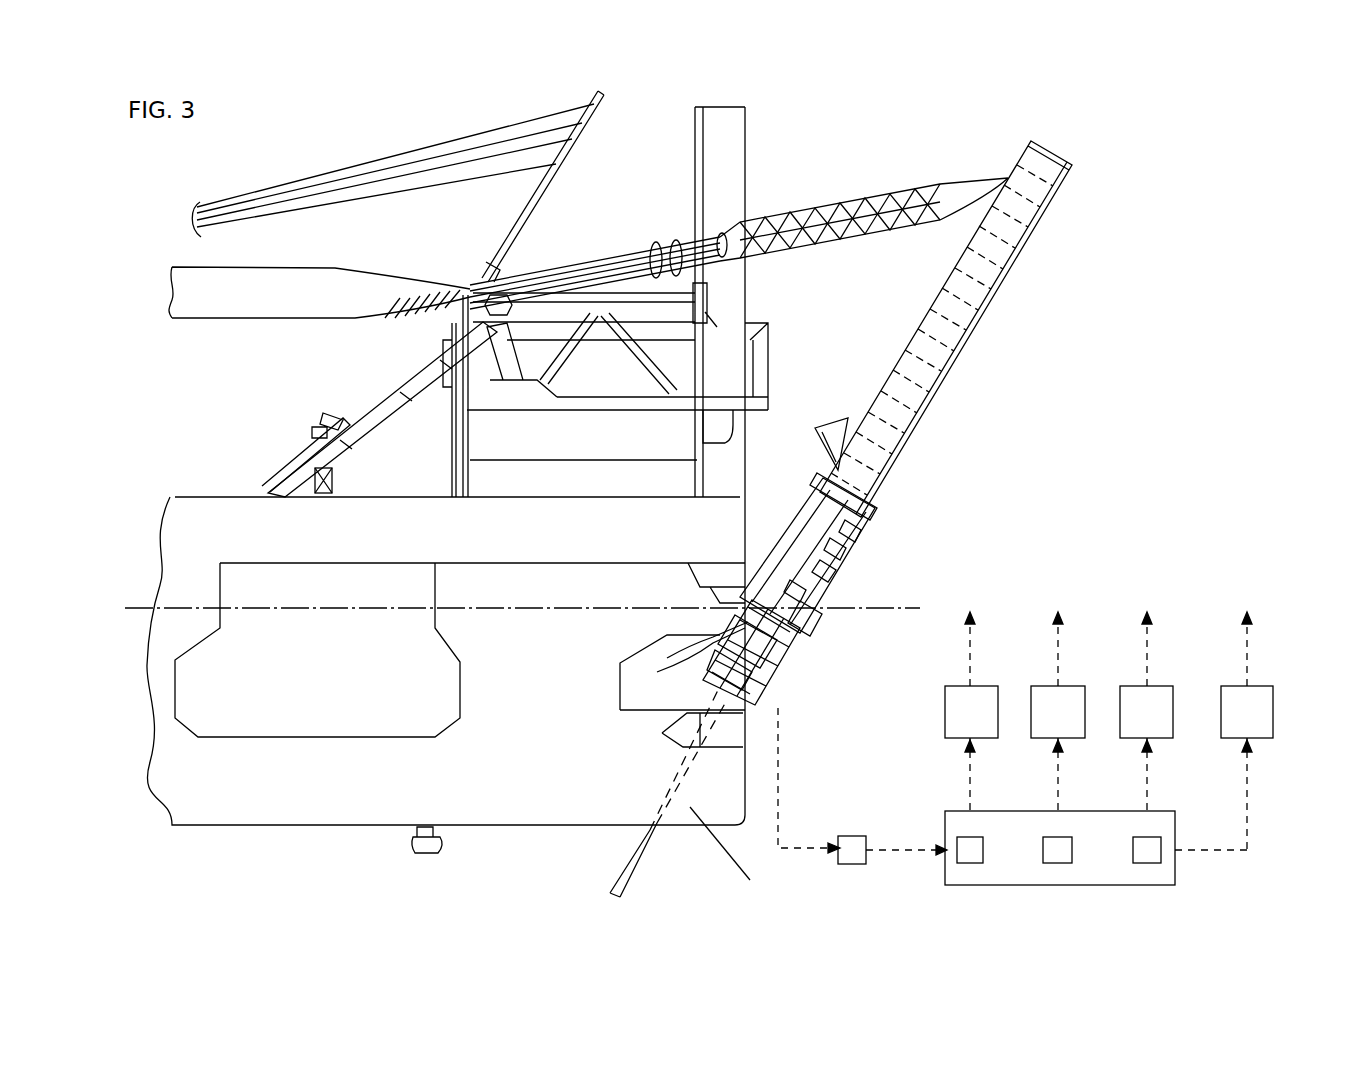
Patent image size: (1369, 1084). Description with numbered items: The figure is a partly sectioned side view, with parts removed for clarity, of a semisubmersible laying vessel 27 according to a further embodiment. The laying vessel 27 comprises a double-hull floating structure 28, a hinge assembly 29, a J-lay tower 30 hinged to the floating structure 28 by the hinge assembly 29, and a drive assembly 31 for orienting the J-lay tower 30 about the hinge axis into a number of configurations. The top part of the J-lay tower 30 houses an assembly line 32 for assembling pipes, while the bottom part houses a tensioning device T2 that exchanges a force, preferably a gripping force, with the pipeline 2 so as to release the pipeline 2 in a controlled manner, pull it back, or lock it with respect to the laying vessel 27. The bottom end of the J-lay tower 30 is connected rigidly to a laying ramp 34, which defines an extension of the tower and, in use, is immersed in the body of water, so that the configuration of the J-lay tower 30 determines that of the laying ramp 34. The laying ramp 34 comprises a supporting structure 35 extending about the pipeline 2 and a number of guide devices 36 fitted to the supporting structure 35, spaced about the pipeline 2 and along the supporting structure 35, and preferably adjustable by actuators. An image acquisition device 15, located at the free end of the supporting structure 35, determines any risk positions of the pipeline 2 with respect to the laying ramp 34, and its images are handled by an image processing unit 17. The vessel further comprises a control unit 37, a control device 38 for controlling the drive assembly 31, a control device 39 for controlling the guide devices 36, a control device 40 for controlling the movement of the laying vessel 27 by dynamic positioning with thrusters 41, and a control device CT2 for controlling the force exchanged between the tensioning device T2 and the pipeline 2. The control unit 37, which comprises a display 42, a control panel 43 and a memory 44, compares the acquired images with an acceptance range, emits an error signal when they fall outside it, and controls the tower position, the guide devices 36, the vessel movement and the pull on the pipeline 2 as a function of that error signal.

The pipeline 2 is at (604, 876).
The image acquisition device 15 is at (705, 853).
The image processing unit 17 is at (856, 878).
The laying vessel 27 is at (196, 419).
The floating structure 28 is at (178, 540).
The hinge assembly 29 is at (838, 620).
The J-lay tower 30 is at (970, 368).
The drive assembly 31 is at (818, 198).
The assembly line 32 is at (995, 270).
The laying ramp 34 is at (802, 690).
The supporting structure 35 is at (762, 700).
The guide devices 36 is at (700, 678).
The control unit 37 is at (1063, 865).
The control device 38 is at (987, 690).
The control device 39 is at (1077, 690).
The control device 40 is at (1167, 690).
The thrusters 41 is at (412, 850).
The display 42 is at (1147, 888).
The control panel 43 is at (1058, 888).
The memory 44 is at (970, 888).
The tensioning device T2 is at (842, 530).
The control device CT2 is at (1257, 710).